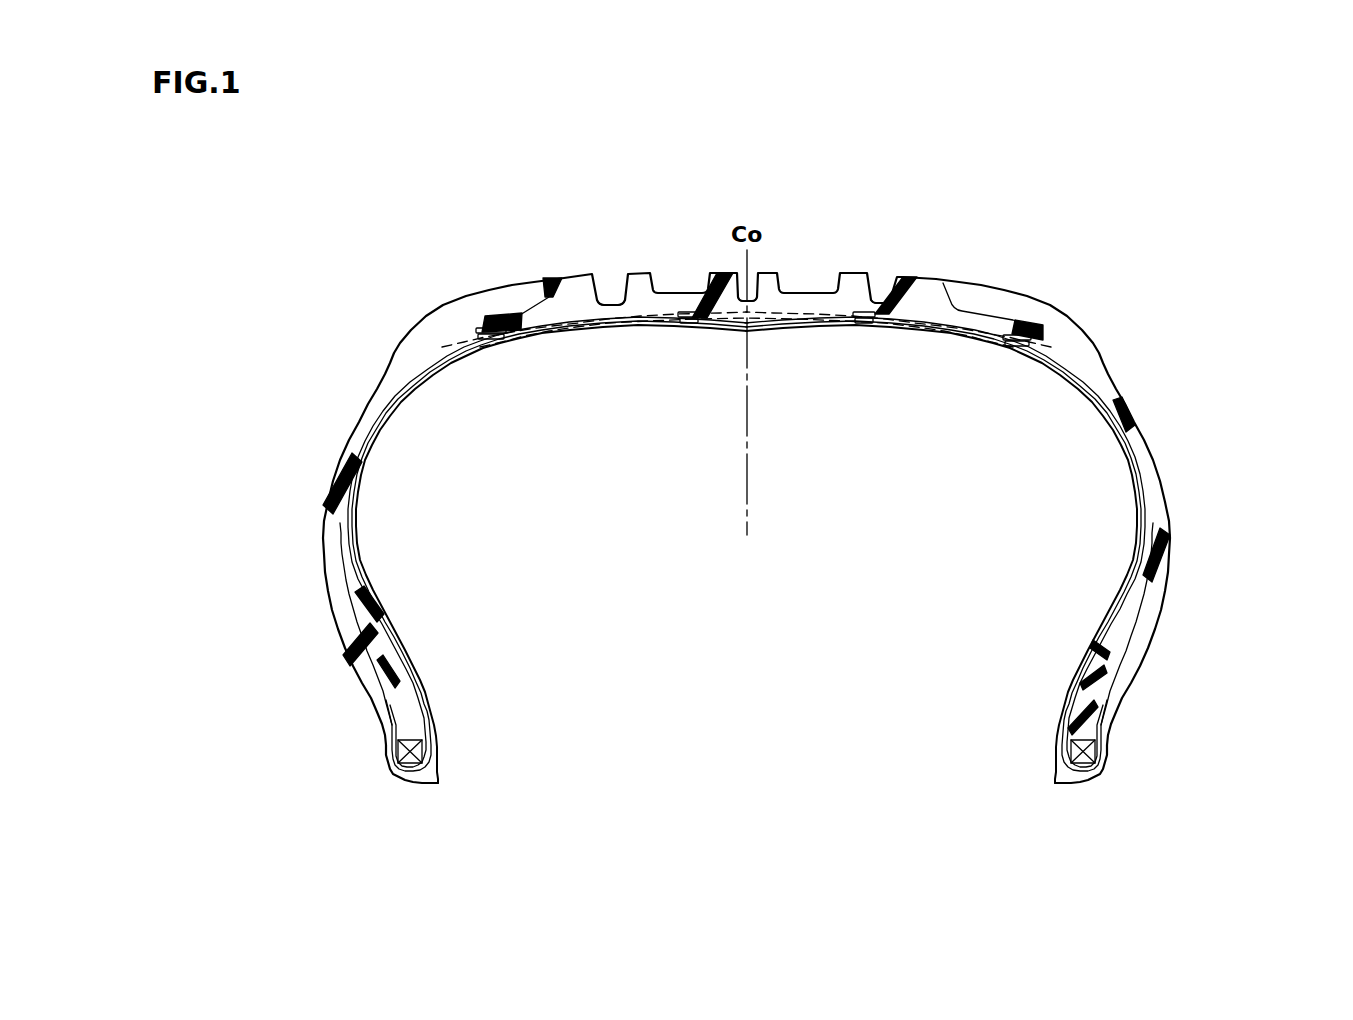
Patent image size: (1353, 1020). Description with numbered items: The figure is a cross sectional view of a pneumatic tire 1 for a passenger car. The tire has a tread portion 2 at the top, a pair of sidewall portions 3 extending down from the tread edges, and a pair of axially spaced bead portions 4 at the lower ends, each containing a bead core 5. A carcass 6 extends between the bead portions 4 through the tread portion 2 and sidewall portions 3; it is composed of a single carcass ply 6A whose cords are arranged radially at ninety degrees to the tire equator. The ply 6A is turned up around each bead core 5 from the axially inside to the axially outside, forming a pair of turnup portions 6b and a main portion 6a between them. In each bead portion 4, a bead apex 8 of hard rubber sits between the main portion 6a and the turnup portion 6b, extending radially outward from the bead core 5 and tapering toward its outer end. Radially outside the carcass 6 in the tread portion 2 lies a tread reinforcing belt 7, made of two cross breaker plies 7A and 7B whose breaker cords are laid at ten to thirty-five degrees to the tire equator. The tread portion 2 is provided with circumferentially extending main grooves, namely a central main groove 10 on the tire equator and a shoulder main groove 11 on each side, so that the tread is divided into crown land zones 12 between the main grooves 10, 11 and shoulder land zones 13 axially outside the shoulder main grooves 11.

The pneumatic tire 1 is at (1135, 266).
The tread portion 2 is at (1016, 270).
The sidewall portion 3 is at (305, 515).
The bead portion 4 is at (470, 745).
The bead core 5 is at (410, 758).
The carcass 6 is at (1005, 550).
The carcass ply 6A is at (690, 544).
The main portion 6a is at (1097, 637).
The turnup portion 6b is at (345, 568).
The tread reinforcing belt 7 is at (905, 446).
The breaker ply 7A is at (893, 326).
The breaker ply 7B is at (826, 325).
The bead apex 8 is at (395, 698).
The central main groove 10 is at (756, 268).
The shoulder main groove 11 is at (610, 268).
The crown land zone 12 is at (672, 290).
The shoulder land zone 13 is at (486, 287).